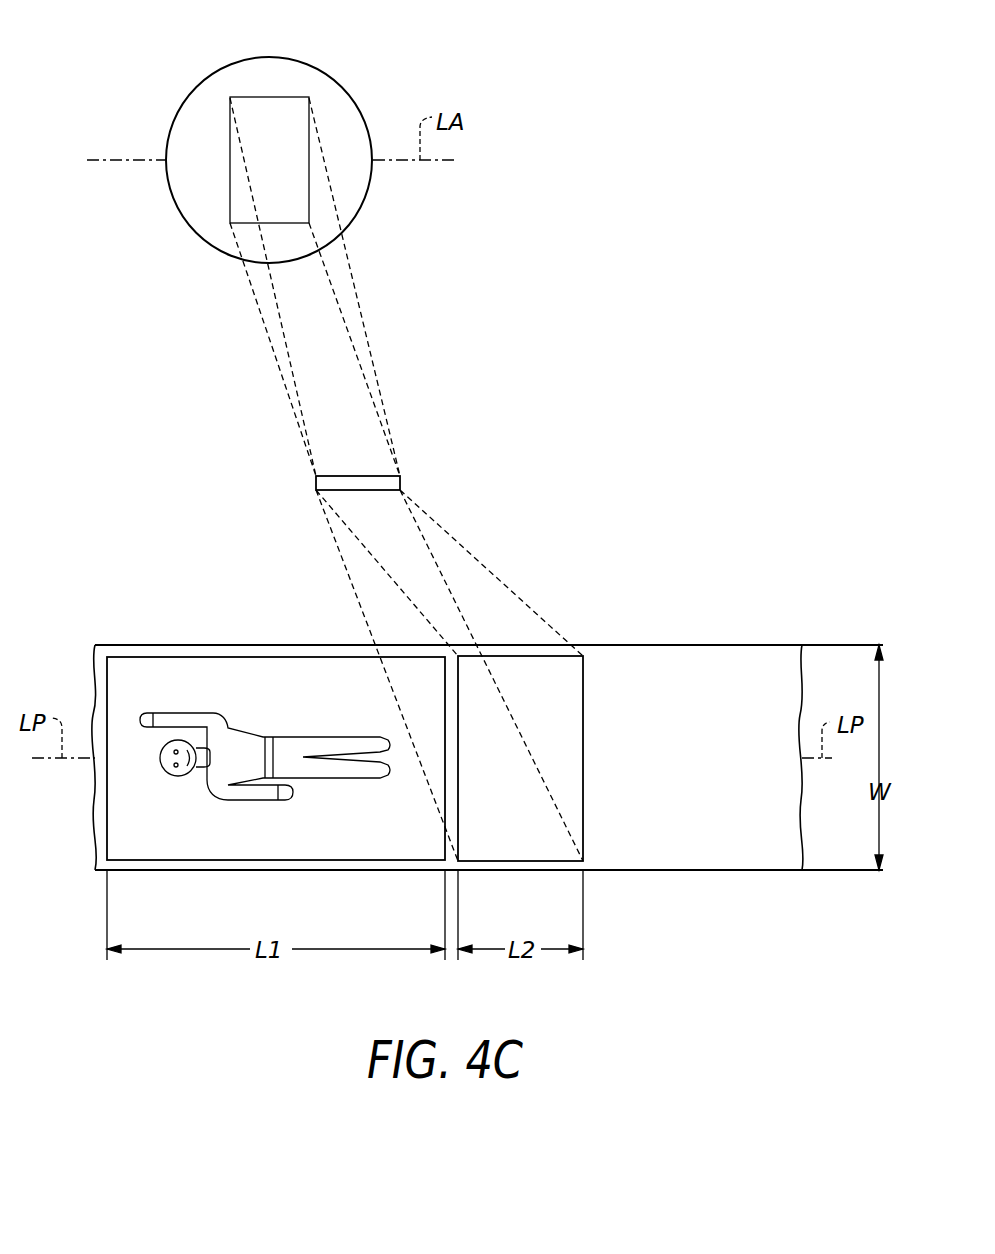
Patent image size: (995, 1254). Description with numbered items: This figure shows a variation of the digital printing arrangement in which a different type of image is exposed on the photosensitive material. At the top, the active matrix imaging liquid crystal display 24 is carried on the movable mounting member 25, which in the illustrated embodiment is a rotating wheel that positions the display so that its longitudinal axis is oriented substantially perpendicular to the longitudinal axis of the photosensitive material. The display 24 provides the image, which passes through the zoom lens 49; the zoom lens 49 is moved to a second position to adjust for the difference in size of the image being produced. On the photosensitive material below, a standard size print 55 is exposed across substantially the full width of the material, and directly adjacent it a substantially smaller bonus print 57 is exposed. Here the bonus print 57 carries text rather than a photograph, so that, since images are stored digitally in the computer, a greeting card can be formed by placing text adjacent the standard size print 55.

The active matrix imaging liquid crystal display 24 is at (282, 97).
The movable mounting member 25 is at (188, 226).
The zoom lens 49 is at (400, 483).
The index print 55 is at (345, 853).
The bonus print 57 is at (509, 850).